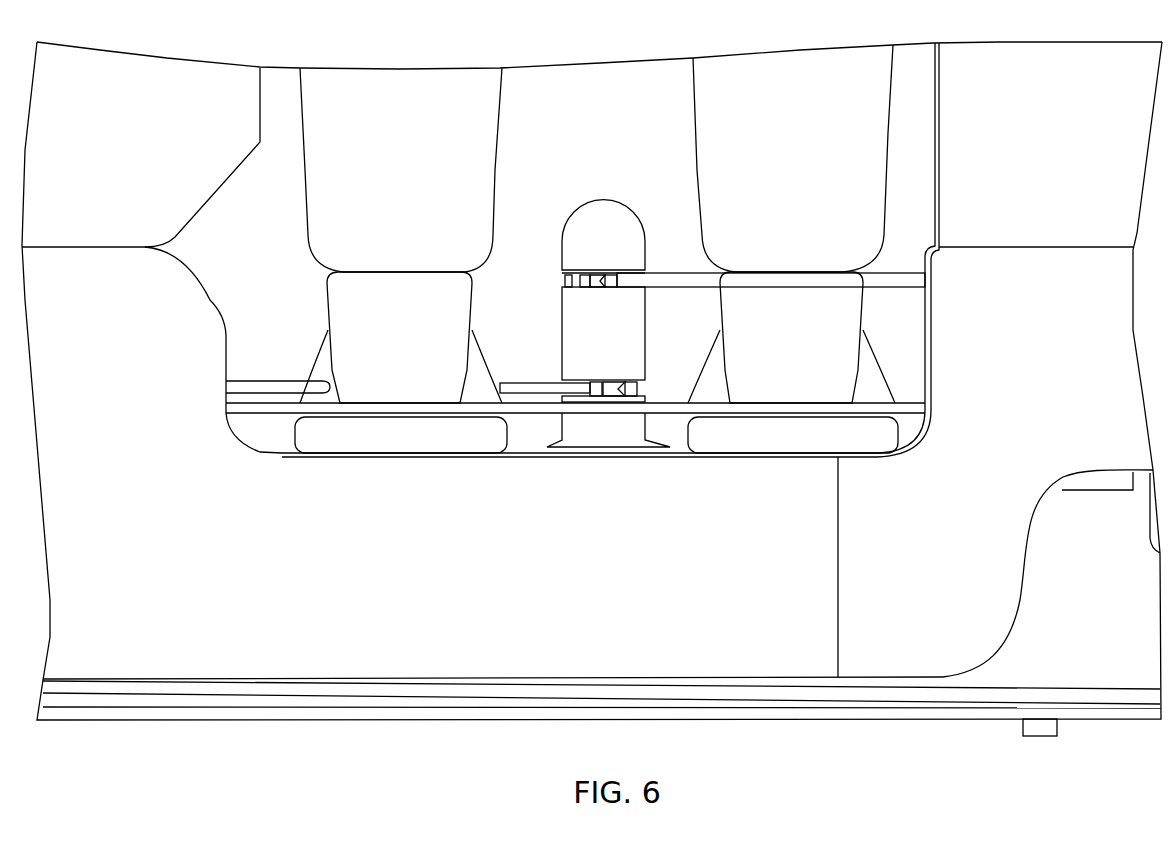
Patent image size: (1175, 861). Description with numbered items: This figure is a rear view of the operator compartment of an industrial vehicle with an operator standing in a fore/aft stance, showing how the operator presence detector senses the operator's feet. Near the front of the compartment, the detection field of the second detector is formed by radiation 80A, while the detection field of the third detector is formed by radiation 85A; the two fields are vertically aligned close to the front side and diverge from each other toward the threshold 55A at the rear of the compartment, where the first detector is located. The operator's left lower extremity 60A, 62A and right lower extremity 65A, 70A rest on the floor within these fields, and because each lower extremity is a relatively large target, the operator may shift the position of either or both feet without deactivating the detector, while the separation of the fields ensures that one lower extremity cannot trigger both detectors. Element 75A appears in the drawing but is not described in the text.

The threshold 55A is at (290, 458).
The operator's left lower extremity 60A is at (448, 439).
The operator's left lower extremity 62A is at (404, 85).
The operator's right lower extremity 65A is at (778, 61).
The operator's right lower extremity 70A is at (735, 441).
The actuator column 75A is at (528, 409).
The radiation 80A is at (281, 388).
The radiation 85A is at (683, 283).